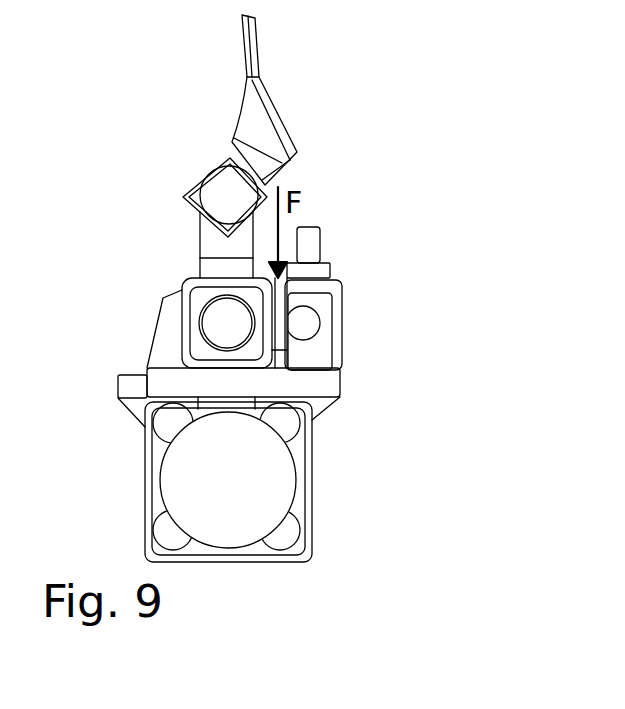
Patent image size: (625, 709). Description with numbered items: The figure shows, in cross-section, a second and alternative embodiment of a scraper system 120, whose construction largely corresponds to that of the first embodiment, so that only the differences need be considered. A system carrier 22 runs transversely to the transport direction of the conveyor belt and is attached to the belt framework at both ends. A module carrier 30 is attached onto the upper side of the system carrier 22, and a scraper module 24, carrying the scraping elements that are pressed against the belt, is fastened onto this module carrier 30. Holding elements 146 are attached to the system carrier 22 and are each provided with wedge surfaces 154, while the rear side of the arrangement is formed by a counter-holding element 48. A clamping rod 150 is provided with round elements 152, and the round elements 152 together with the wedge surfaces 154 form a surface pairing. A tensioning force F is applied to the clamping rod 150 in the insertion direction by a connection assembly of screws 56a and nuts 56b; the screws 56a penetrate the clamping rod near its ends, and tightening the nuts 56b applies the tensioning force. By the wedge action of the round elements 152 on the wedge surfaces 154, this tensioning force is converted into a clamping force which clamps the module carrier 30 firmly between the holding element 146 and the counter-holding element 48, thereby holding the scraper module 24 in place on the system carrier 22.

The system carrier 22 is at (147, 472).
The scraper module 24 is at (200, 238).
The module carrier 30 is at (185, 310).
The counter-holding element 48 is at (172, 348).
The screw 56a is at (306, 227).
The nut 56b is at (322, 268).
The scraper system 120 is at (383, 197).
The holding element 146 is at (327, 355).
The clamping rod 150 is at (278, 330).
The round element 152 is at (300, 318).
The wedge surface 154 is at (313, 323).